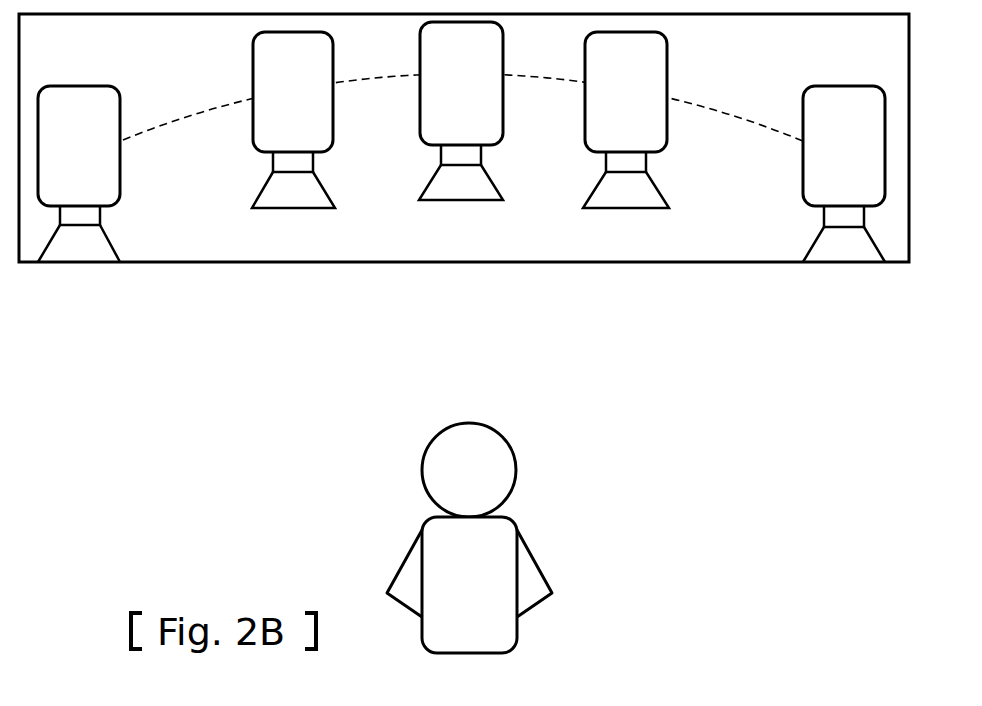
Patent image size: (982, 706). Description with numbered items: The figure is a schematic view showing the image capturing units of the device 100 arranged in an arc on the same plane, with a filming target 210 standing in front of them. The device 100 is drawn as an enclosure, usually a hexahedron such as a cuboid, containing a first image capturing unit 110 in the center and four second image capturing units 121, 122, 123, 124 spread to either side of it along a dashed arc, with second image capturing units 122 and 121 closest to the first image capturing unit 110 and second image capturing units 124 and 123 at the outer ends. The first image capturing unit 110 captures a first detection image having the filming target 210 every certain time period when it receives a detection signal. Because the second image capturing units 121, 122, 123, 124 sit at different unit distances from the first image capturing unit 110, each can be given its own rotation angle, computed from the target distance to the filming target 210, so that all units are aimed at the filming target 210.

The device 100 is at (853, 53).
The first image capturing unit 110 is at (444, 64).
The second image capturing unit 121 is at (610, 71).
The second image capturing unit 122 is at (272, 71).
The second image capturing unit 123 is at (826, 127).
The second image capturing unit 124 is at (57, 127).
The filming target 210 is at (537, 555).